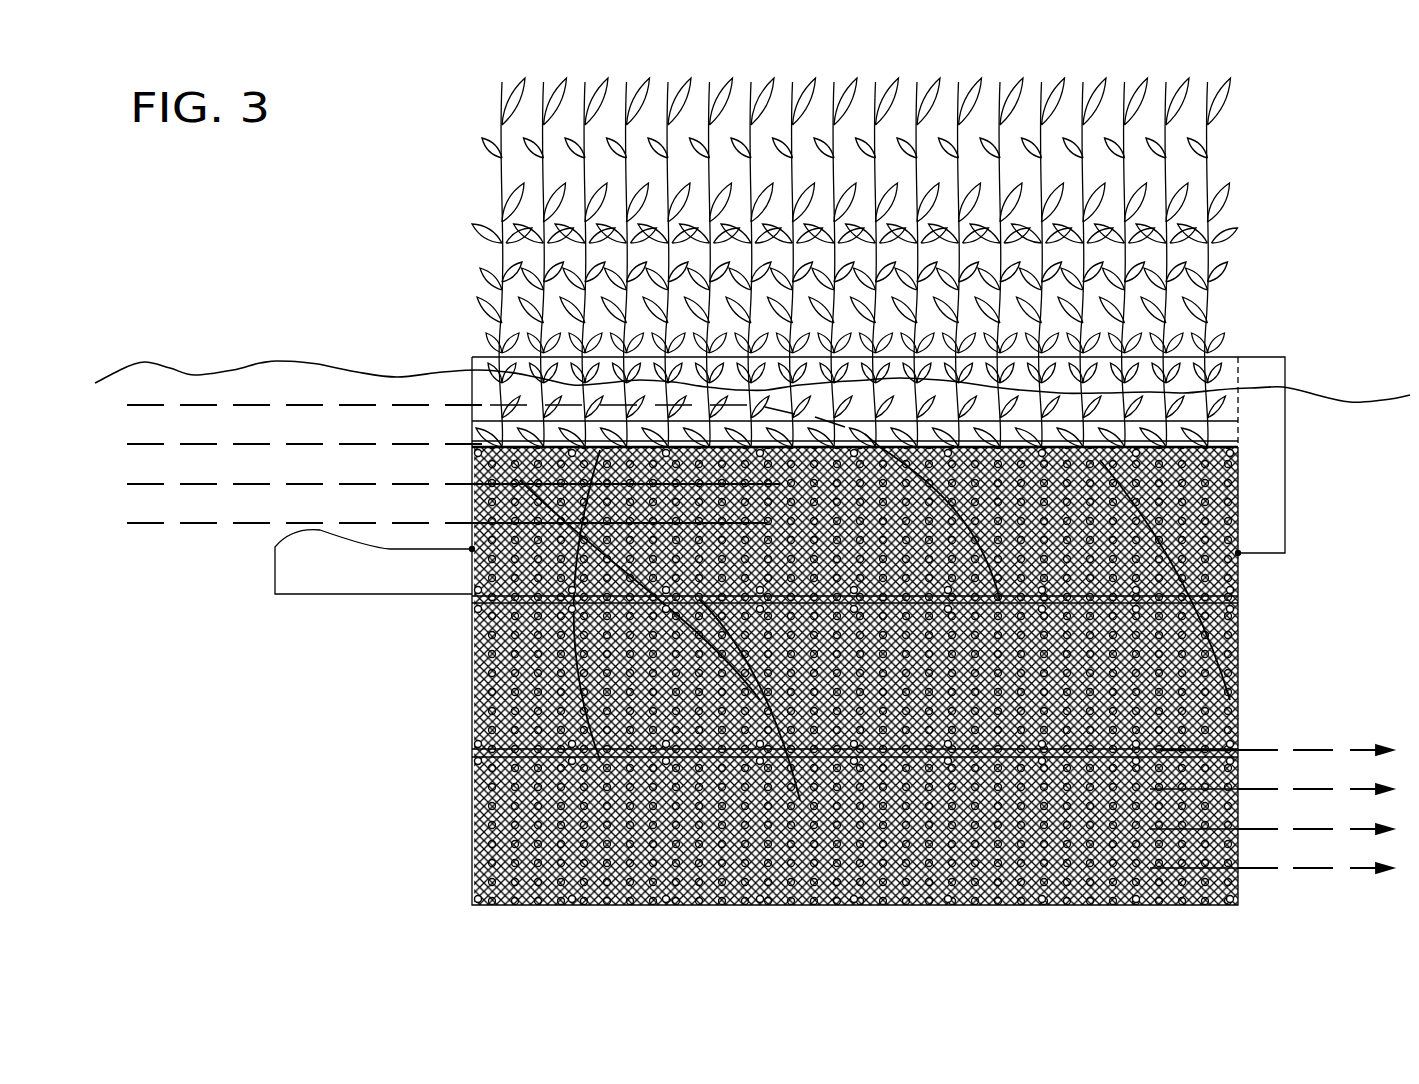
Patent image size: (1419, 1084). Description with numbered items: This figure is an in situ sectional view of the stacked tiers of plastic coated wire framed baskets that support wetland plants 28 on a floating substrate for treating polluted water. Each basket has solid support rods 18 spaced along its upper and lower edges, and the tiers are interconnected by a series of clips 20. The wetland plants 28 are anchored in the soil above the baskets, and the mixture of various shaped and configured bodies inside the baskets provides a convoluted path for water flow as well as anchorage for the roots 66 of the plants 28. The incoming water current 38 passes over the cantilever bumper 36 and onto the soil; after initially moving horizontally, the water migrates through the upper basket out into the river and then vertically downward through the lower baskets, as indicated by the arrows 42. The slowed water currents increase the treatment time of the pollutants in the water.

The support rod 18 is at (474, 758).
The clip 20 is at (472, 806).
The wetland plant 28 is at (665, 92).
The cantilever bumper 36 is at (300, 580).
The incoming water current 38 is at (306, 405).
The arrow 42 is at (1358, 749).
The root 66 is at (474, 694).